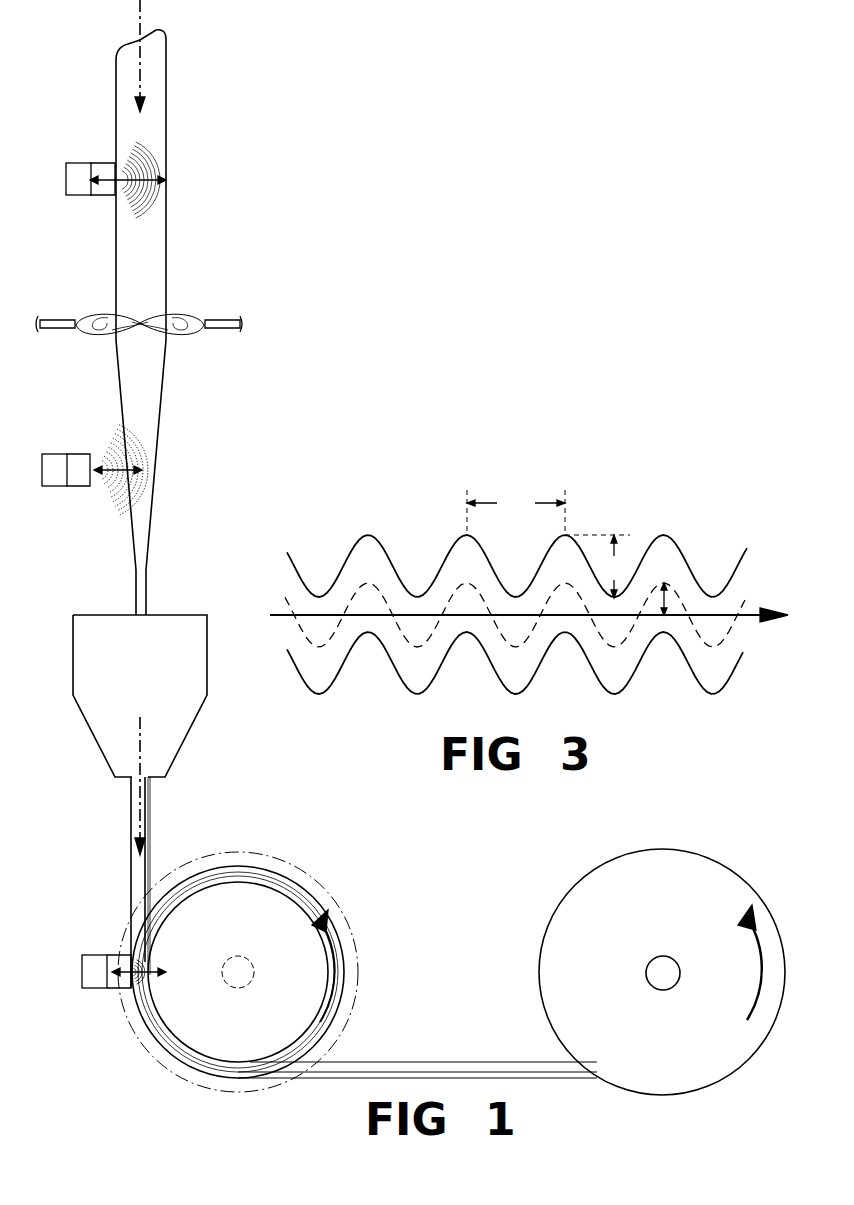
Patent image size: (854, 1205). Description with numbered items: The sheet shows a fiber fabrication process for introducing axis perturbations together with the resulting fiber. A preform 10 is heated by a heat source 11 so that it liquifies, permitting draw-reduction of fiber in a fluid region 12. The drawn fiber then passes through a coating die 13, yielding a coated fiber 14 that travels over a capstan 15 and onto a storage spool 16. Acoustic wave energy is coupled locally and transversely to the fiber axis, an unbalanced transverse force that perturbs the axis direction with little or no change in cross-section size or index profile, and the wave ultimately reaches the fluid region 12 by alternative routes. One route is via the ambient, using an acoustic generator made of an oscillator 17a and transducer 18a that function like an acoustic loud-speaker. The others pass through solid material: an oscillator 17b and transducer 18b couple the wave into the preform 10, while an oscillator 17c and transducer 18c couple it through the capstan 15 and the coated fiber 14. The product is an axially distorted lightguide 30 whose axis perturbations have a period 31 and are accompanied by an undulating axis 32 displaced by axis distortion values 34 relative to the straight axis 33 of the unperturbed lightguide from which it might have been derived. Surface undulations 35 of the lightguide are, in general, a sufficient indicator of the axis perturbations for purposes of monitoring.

In FIG. 1, the preform 10 is at (110, 60).
In FIG. 1, the heat source 11 is at (65, 318).
In FIG. 1, the fluid region 12 is at (157, 390).
In FIG. 1, the coating die 13 is at (108, 612).
In FIG. 1, the coated fiber 14 is at (130, 873).
In FIG. 1, the capstan 15 is at (238, 852).
In FIG. 1, the storage spool 16 is at (663, 849).
In FIG. 1, the oscillator 17a is at (55, 486).
In FIG. 1, the oscillator 17b is at (80, 195).
In FIG. 1, the oscillator 17c is at (96, 988).
In FIG. 1, the transducer 18a is at (80, 456).
In FIG. 1, the transducer 18b is at (106, 165).
In FIG. 1, the transducer 18c is at (120, 957).
In FIG. 3, the axially distorted lightguide 30 is at (366, 514).
In FIG. 3, the period 31 is at (516, 511).
In FIG. 3, the undulating axis 32 is at (335, 637).
In FIG. 3, the straight axis 33 is at (283, 614).
In FIG. 3, the axis distortion values 34 is at (668, 597).
In FIG. 3, the surface undulations 35 is at (597, 566).